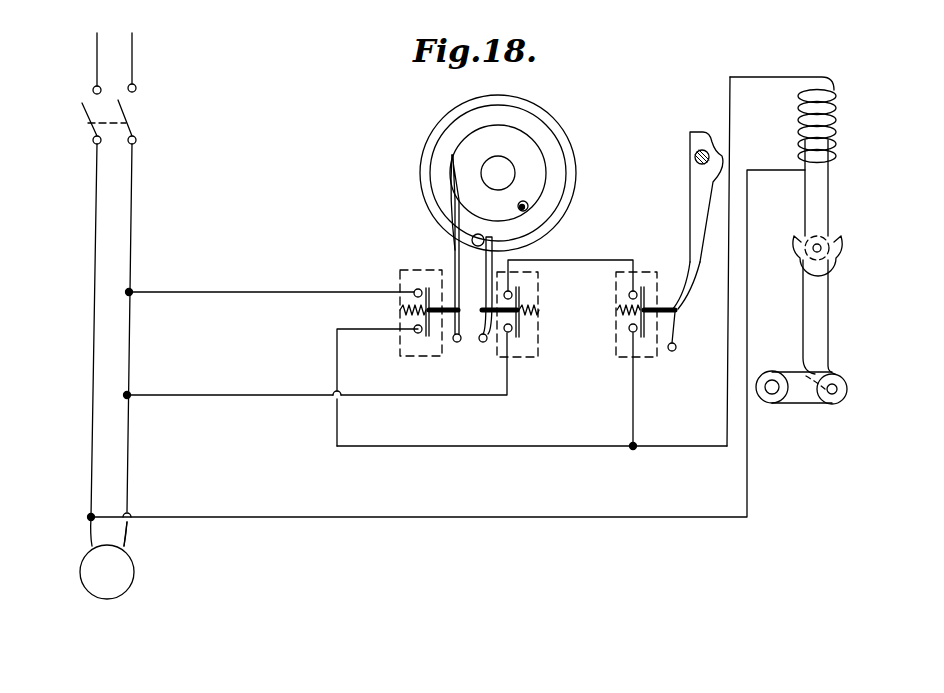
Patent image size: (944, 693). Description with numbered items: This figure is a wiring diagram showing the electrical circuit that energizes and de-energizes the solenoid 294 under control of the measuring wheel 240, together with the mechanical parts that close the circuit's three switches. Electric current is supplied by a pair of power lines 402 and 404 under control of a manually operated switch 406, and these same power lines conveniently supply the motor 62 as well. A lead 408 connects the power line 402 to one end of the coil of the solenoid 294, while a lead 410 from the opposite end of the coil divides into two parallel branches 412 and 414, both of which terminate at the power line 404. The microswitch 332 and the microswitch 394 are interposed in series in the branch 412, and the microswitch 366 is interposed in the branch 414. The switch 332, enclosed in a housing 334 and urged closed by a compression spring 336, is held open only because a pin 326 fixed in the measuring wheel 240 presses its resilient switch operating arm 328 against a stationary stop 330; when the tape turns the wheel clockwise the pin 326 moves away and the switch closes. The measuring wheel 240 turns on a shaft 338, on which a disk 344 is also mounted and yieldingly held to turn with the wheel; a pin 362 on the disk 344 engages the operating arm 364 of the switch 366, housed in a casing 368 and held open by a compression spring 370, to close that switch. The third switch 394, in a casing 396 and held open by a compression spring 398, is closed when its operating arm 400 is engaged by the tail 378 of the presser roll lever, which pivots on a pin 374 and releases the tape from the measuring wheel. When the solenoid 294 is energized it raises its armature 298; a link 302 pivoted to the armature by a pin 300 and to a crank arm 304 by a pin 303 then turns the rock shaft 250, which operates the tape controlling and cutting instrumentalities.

The motor 62 is at (134, 576).
The measuring wheel 240 is at (458, 116).
The rock shaft 250 is at (771, 405).
The solenoid 294 is at (801, 130).
The armature 298 is at (826, 198).
The pin 300 is at (810, 250).
The link 302 is at (805, 296).
The pin 303 is at (833, 406).
The crank arm 304 is at (800, 404).
The pin 326 is at (480, 233).
The switch operating arm 328 is at (481, 290).
The stationary stop 330 is at (540, 248).
The microswitch 332 is at (522, 297).
The housing 334 is at (526, 358).
The compression spring 336 is at (521, 320).
The shaft 338 is at (533, 156).
The disk 344 is at (511, 160).
The pin 362 is at (529, 205).
The operating arm 364 is at (454, 255).
The microswitch 366 is at (430, 285).
The casing 368 is at (418, 358).
The compression spring 370 is at (404, 306).
The pin 374 is at (696, 154).
The tail 378 is at (688, 224).
The microswitch 394 is at (646, 330).
The casing 396 is at (646, 358).
The compression spring 398 is at (621, 308).
The operating arm 400 is at (683, 272).
The power line 402 is at (95, 58).
The power line 404 is at (133, 52).
The manually operated switch 406 is at (152, 111).
The lead 408 is at (490, 519).
The lead 410 is at (700, 449).
The branch 412 is at (240, 397).
The branch 414 is at (242, 294).